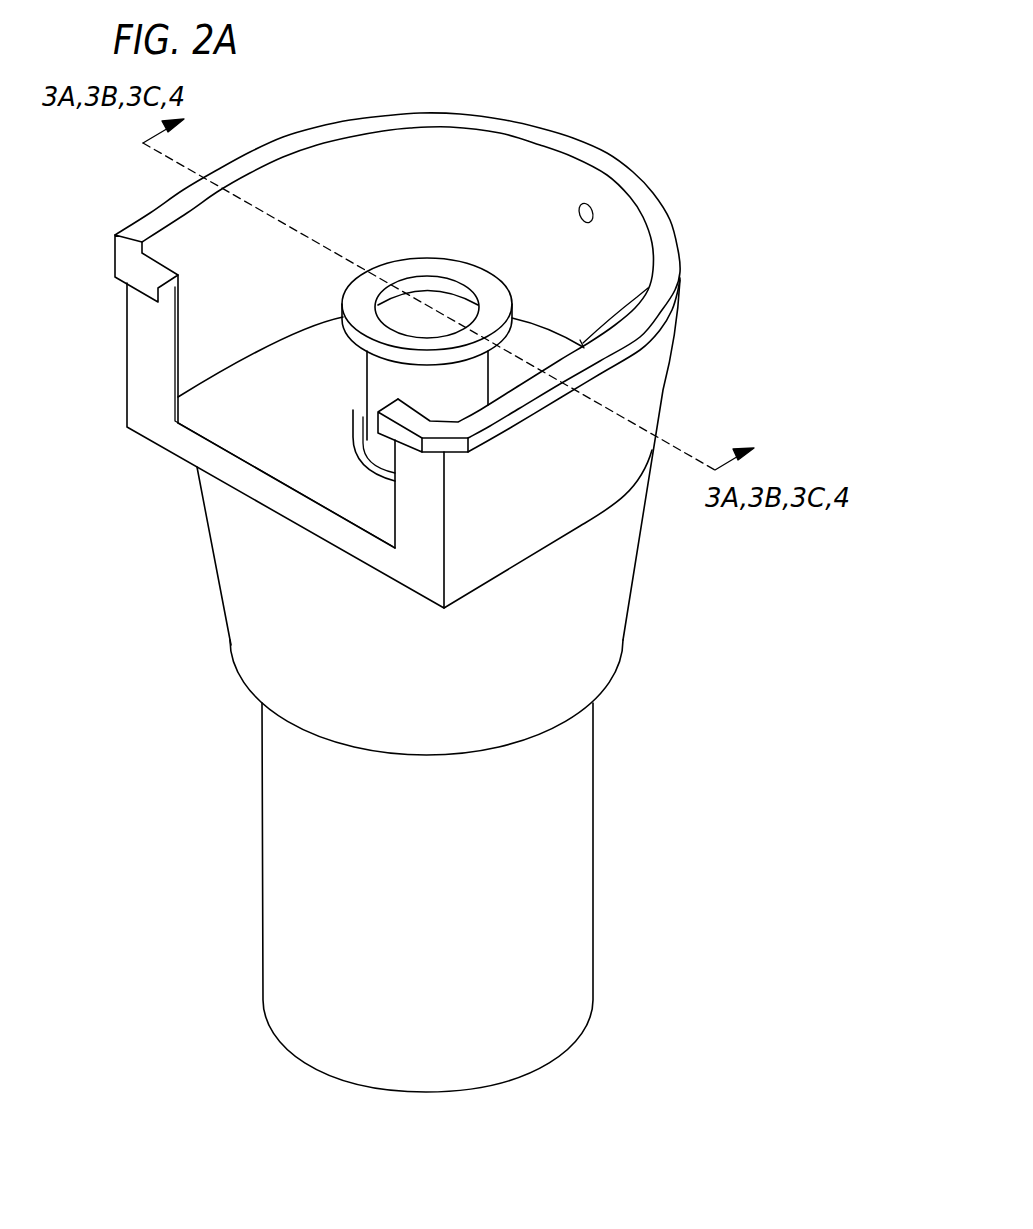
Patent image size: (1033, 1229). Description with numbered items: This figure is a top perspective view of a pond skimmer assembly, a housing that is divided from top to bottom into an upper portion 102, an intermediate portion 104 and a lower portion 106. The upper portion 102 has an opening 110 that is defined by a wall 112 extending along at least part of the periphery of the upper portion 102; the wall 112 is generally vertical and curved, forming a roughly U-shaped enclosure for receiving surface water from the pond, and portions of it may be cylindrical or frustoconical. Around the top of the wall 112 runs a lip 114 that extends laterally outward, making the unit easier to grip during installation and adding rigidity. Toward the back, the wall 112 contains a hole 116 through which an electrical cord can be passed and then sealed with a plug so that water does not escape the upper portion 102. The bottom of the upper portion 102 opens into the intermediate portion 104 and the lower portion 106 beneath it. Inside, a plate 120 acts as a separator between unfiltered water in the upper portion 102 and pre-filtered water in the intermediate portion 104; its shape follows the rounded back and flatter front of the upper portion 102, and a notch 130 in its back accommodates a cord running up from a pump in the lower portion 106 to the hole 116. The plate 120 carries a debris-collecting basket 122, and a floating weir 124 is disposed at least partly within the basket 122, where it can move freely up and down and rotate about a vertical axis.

The upper portion 102 is at (636, 396).
The intermediate portion 104 is at (583, 618).
The lower portion 106 is at (537, 940).
The opening 110 is at (247, 385).
The wall 112 is at (527, 181).
The lip 114 is at (361, 119).
The hole 116 is at (593, 211).
The plate 120 is at (352, 496).
The basket 122 is at (350, 448).
The floating weir 124 is at (383, 381).
The notch 130 is at (650, 293).